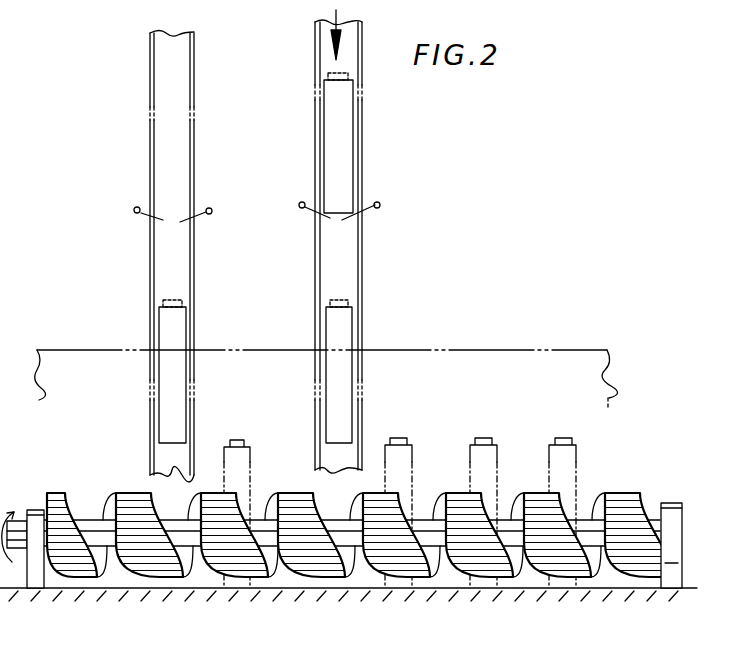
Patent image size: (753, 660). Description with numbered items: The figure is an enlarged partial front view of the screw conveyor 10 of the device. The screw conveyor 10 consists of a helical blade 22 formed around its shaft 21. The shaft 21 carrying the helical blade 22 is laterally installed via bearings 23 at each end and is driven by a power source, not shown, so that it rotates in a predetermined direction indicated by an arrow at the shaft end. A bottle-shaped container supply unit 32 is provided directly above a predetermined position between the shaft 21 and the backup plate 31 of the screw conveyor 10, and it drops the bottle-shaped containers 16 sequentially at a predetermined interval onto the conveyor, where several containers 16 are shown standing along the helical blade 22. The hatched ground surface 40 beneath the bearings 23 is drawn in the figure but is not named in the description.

The screw conveyor 10 is at (337, 537).
The bottle-shaped container 16 is at (333, 159).
The shaft 21 is at (348, 538).
The helical blade 22 is at (495, 570).
The bearings 23 is at (38, 571).
The backup plate 31 is at (512, 356).
The bottle-shaped container supply unit 32 is at (372, 147).
The base 40 is at (131, 590).